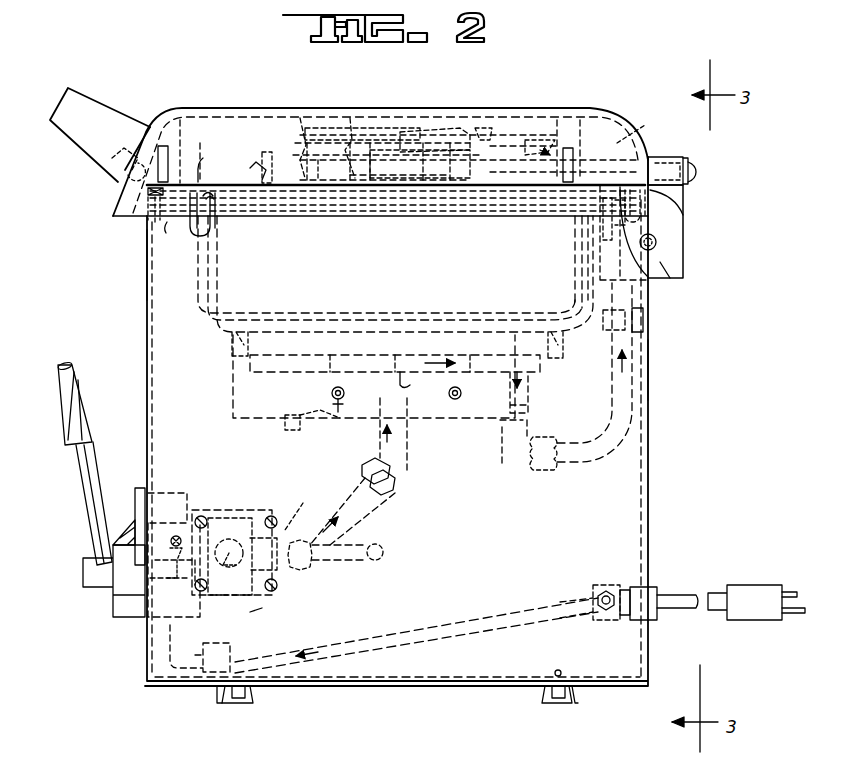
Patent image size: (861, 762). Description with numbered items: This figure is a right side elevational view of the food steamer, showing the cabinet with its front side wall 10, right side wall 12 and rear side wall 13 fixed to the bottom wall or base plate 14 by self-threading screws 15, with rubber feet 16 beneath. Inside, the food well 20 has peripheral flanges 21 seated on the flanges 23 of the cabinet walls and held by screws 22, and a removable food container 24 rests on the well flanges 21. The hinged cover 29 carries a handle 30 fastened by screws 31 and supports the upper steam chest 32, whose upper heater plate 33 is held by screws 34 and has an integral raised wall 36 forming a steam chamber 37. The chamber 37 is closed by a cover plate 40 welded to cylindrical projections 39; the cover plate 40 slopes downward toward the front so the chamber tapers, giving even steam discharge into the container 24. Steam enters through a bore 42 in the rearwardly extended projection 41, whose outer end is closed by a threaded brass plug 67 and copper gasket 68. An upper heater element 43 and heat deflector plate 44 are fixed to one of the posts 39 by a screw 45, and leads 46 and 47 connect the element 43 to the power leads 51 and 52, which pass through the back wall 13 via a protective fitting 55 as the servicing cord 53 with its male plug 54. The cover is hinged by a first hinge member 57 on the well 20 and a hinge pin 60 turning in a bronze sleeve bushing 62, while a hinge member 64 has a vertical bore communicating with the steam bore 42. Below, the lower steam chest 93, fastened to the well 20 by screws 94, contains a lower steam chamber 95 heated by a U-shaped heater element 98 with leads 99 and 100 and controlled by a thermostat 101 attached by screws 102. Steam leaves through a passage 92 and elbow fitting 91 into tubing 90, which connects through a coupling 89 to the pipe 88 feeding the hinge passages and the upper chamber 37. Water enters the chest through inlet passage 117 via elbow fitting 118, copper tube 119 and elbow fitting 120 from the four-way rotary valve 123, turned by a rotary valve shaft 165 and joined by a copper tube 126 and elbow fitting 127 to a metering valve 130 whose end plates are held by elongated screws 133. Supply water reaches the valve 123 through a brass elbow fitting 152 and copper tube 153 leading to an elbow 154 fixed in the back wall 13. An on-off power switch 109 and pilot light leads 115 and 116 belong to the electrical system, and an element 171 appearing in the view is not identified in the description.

The front side wall 10 is at (147, 283).
The right side wall 12 is at (152, 252).
The rear side wall 13 is at (650, 360).
The bottom wall or base plate 14 is at (366, 688).
The self-threading screws 15 is at (245, 704).
The supporting rubber pads or feet 16 is at (220, 703).
The food well 20 is at (218, 335).
The peripheral flanges 21 is at (210, 233).
The screws 22 is at (134, 215).
The flanges 23 is at (168, 222).
The food container 24 is at (570, 260).
The cover 29 is at (533, 112).
The handle 30 is at (103, 110).
The screws 31 is at (112, 165).
The upper steam receiving and discharge chest 32 is at (277, 155).
The upper heater plate 33 is at (200, 186).
The screws 34 is at (170, 155).
The raised wall 36 is at (265, 160).
The steam chamber 37 is at (314, 182).
The cylindrical projections 39 is at (420, 176).
The cover plate 40 is at (530, 148).
The rearwardly extended projection 41 is at (650, 160).
The bore 42 is at (598, 162).
The upper heater element 43 is at (420, 150).
The heat deflector plate 44 is at (302, 116).
The screw 45 is at (346, 116).
The lead 46 is at (480, 135).
The lead 47 is at (470, 115).
The power source lead 51 is at (602, 590).
The power source lead 52 is at (624, 556).
The servicing cord 53 is at (670, 609).
The male plug 54 is at (772, 588).
The protective fitting 55 is at (650, 586).
The first hinge member 57 is at (655, 248).
The hinge pin 60 is at (656, 245).
The bronze sleeve bushing 62 is at (680, 270).
The hinge member 64 is at (678, 195).
The threaded brass plug 67 is at (697, 170).
The copper gasket 68 is at (690, 160).
The pipe 88 is at (650, 292).
The coupling 89 is at (645, 326).
The tubing 90 is at (628, 412).
The elbow fitting 91 is at (510, 467).
The steam bore or passage 92 is at (535, 390).
The lower steam chest 93 is at (250, 424).
The screws 94 is at (255, 318).
The lower steam chamber 95 is at (325, 358).
The lower heater element 98 is at (334, 406).
The lead 99 is at (330, 394).
The lead 100 is at (457, 398).
The thermostat 101 is at (322, 420).
The screws 102 is at (284, 430).
The on-off power switch 109 is at (139, 485).
The lead 115 is at (176, 570).
The lead 116 is at (166, 568).
The water inlet bore or passage 117 is at (421, 383).
The elbow fitting 118 is at (405, 450).
The copper tube 119 is at (355, 522).
The elbow fitting 120 is at (300, 578).
The four-way rotary flow control valve 123 is at (260, 616).
The copper tube 126 is at (348, 578).
The second brass elbow fitting 127 is at (225, 595).
The metering valve 130 is at (305, 506).
The elongated screws 133 is at (262, 512).
The brass elbow fitting 152 is at (170, 658).
The copper tube 153 is at (418, 645).
The elbow 154 is at (600, 622).
The rotary valve shaft 165 is at (82, 575).
The handle lever 171 is at (70, 428).